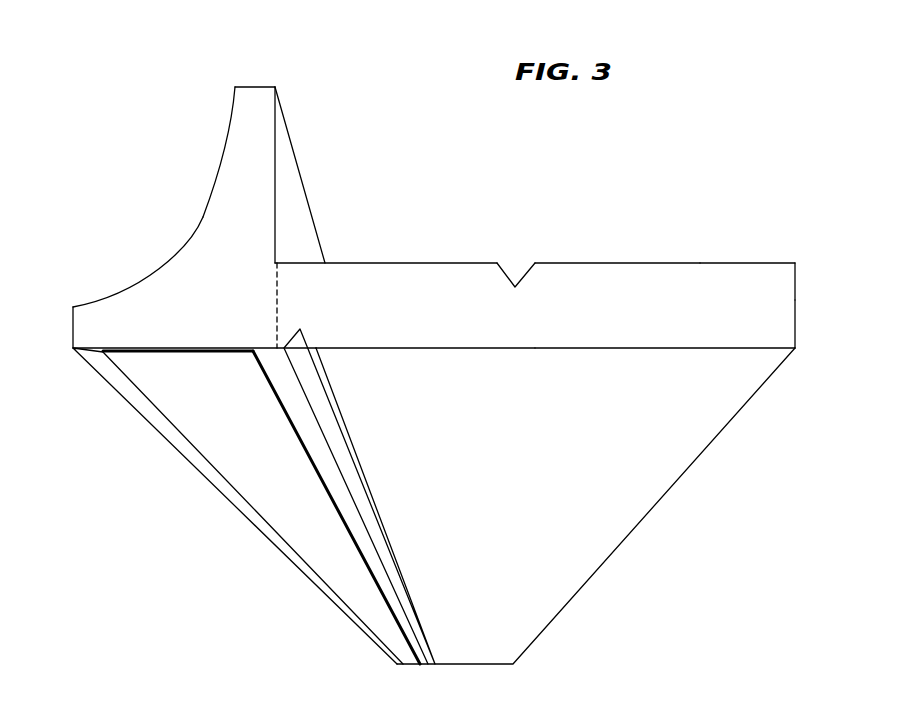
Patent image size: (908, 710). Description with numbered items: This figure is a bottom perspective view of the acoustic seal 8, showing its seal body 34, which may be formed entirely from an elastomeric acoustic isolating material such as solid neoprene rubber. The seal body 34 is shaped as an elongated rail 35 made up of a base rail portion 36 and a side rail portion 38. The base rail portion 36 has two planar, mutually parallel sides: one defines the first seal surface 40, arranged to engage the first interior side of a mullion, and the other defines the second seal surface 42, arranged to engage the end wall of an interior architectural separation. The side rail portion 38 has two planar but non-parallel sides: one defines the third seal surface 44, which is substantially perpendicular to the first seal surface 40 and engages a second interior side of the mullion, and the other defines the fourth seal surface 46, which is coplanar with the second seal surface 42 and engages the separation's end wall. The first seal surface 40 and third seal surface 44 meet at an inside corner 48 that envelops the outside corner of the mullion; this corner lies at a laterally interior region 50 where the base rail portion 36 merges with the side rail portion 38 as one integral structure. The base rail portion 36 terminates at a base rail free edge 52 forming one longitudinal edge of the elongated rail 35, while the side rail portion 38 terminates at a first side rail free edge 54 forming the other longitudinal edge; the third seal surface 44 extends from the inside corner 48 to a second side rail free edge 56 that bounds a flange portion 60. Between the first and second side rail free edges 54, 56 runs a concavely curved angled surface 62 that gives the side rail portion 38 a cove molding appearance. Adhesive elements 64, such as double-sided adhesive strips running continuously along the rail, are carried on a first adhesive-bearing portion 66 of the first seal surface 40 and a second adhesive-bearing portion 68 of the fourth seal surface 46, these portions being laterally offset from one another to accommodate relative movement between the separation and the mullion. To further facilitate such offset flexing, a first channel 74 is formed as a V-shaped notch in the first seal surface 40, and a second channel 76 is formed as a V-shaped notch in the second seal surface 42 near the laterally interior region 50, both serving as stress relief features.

The acoustic seal 8 is at (132, 115).
The seal body 34 is at (668, 490).
The elongated rail 35 is at (793, 263).
The base rail portion 36 is at (422, 288).
The side rail portion 38 is at (205, 215).
The first seal surface 40 is at (562, 263).
The second seal surface 42 is at (708, 349).
The third seal surface 44 is at (302, 175).
The fourth seal surface 46 is at (95, 356).
The inside corner 48 is at (294, 250).
The laterally interior region 50 is at (276, 307).
The base rail free edge 52 is at (795, 306).
The first side rail free edge 54 is at (73, 325).
The second side rail free edge 56 is at (256, 87).
The flange portion 60 is at (258, 216).
The angled surface 62 is at (228, 140).
The adhesive elements 64 is at (722, 263).
The first adhesive-bearing portion 66 is at (660, 265).
The second adhesive-bearing portion 68 is at (143, 348).
The first channel 74 is at (522, 268).
The second channel 76 is at (302, 340).